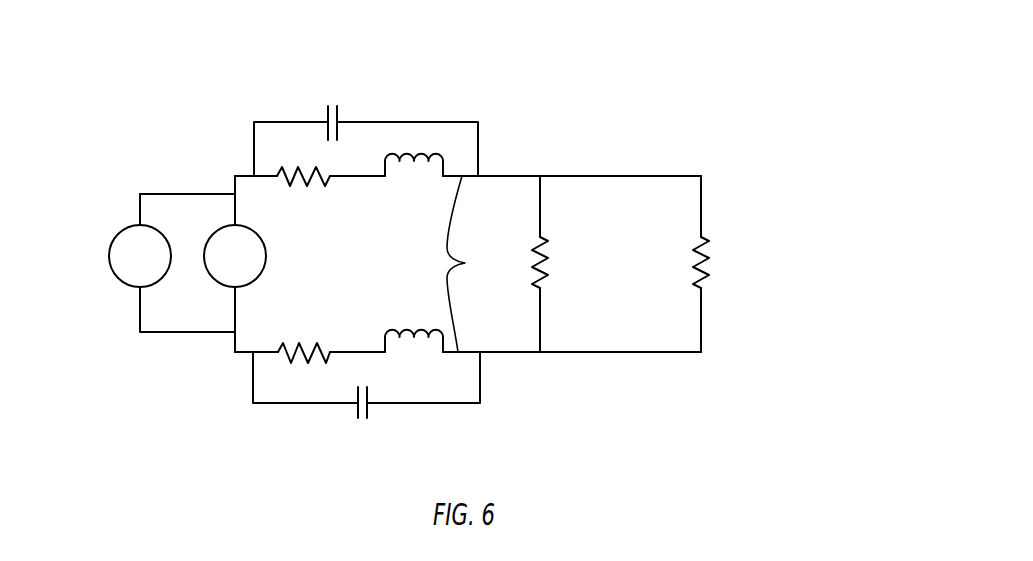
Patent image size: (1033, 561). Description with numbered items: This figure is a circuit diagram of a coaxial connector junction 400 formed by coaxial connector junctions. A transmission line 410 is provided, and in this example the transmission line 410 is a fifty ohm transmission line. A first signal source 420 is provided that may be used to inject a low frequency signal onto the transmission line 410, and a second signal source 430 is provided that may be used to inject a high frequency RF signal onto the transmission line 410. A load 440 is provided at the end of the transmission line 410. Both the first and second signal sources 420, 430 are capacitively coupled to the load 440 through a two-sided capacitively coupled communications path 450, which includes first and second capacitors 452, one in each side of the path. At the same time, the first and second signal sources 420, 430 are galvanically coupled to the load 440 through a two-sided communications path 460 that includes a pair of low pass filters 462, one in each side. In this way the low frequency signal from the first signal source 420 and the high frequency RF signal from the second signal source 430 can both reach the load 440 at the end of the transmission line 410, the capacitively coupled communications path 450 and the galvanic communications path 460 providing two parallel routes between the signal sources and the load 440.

The coaxial connector junction 400 is at (463, 48).
The transmission line 410 is at (568, 140).
The first signal source 420 is at (155, 268).
The second signal source 430 is at (250, 268).
The load 440 is at (709, 265).
The two-sided capacitively coupled communications path 450 is at (421, 122).
The capacitors 452 is at (328, 112).
The two-sided communications path 460 is at (465, 263).
The low pass filters 462 is at (316, 181).